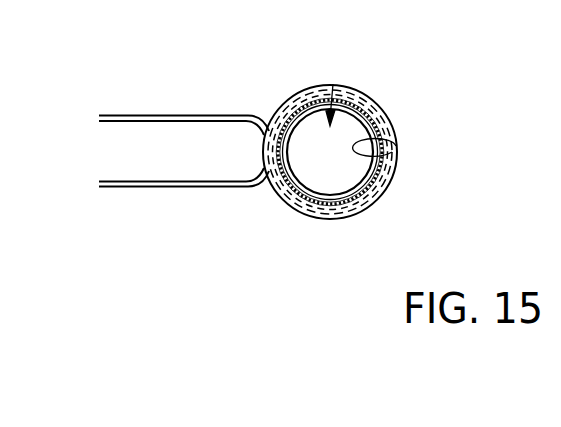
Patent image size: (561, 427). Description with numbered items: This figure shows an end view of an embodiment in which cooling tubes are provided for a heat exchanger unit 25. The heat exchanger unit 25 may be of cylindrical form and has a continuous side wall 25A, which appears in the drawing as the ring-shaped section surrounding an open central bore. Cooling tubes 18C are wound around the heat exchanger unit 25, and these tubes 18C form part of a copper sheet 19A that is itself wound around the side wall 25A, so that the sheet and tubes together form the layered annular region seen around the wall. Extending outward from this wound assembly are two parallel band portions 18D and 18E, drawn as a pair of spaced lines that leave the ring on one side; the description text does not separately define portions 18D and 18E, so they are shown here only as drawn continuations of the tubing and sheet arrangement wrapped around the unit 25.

The cooling tubes 18C is at (305, 216).
The upper band arm 18D is at (137, 113).
The lower band arm 18E is at (162, 188).
The copper sheet 19A is at (308, 87).
The heat exchanger unit 25 is at (333, 86).
The continuous side wall 25A is at (392, 152).